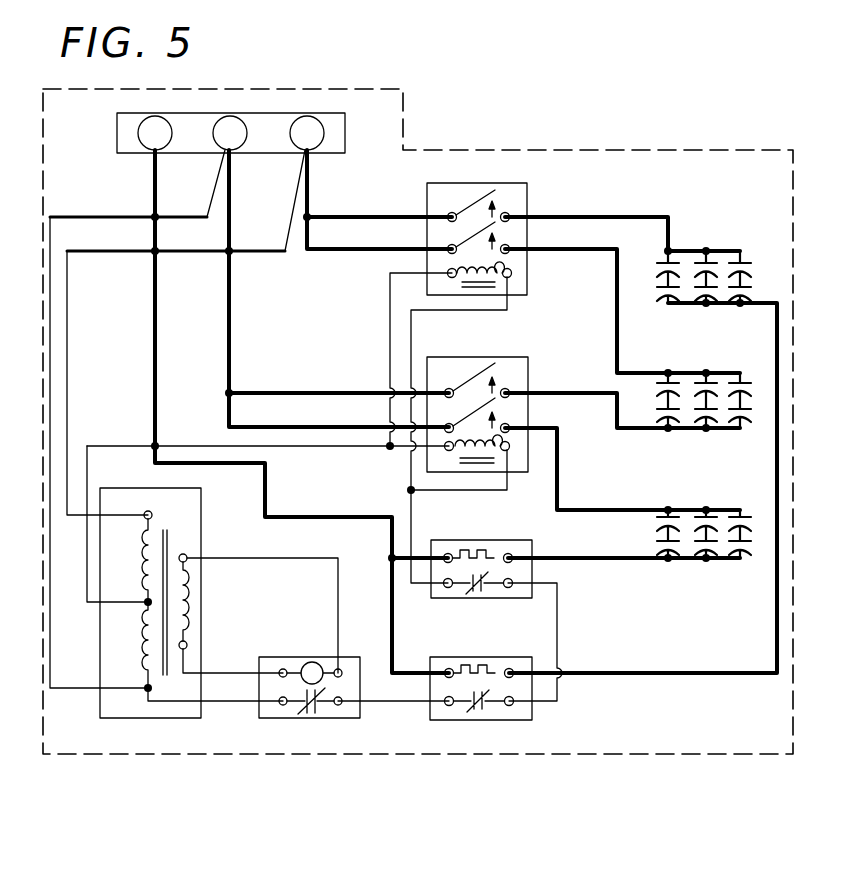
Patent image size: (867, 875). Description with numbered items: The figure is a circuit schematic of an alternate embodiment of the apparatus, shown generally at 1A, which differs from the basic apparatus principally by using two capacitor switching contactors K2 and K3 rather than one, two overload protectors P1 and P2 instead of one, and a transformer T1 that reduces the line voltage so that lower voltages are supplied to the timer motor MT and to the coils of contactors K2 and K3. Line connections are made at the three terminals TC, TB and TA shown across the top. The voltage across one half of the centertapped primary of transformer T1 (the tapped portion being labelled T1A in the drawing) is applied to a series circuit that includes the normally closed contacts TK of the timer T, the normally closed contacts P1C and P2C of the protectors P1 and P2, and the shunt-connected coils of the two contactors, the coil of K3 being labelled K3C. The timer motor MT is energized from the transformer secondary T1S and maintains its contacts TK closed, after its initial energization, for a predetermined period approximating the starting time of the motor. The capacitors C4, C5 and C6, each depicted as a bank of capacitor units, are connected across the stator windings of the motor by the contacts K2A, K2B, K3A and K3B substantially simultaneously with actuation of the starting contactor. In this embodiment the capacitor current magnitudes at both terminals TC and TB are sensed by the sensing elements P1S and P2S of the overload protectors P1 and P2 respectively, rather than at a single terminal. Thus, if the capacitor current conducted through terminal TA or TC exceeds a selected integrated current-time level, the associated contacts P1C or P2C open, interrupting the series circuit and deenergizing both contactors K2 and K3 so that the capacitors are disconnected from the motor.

The apparatus 1A is at (585, 149).
The terminal TC is at (155, 133).
The terminal TB is at (230, 133).
The terminal TA is at (307, 133).
The capacitor switching contactor K2 is at (456, 226).
The contact K2A is at (476, 198).
The contact K2B is at (470, 236).
The capacitor switching contactor K3 is at (507, 400).
The contact K3A is at (502, 348).
The contact K3B is at (498, 416).
The coil K3C is at (485, 266).
The capacitors C4 is at (704, 233).
The capacitors C5 is at (752, 340).
The capacitors C6 is at (688, 496).
The transformer T1 is at (163, 613).
The transformer T1 primary winding T1A is at (137, 612).
The transformer secondary T1S is at (188, 604).
The timer T is at (298, 684).
The timer motor MT is at (313, 661).
The normally closed contacts TK is at (318, 710).
The overload protector P2 is at (496, 572).
The sensing element P2S is at (478, 540).
The normally closed contacts P2C is at (492, 593).
The overload protector P1 is at (517, 683).
The sensing element P1S is at (481, 657).
The normally closed contacts P1C is at (490, 708).